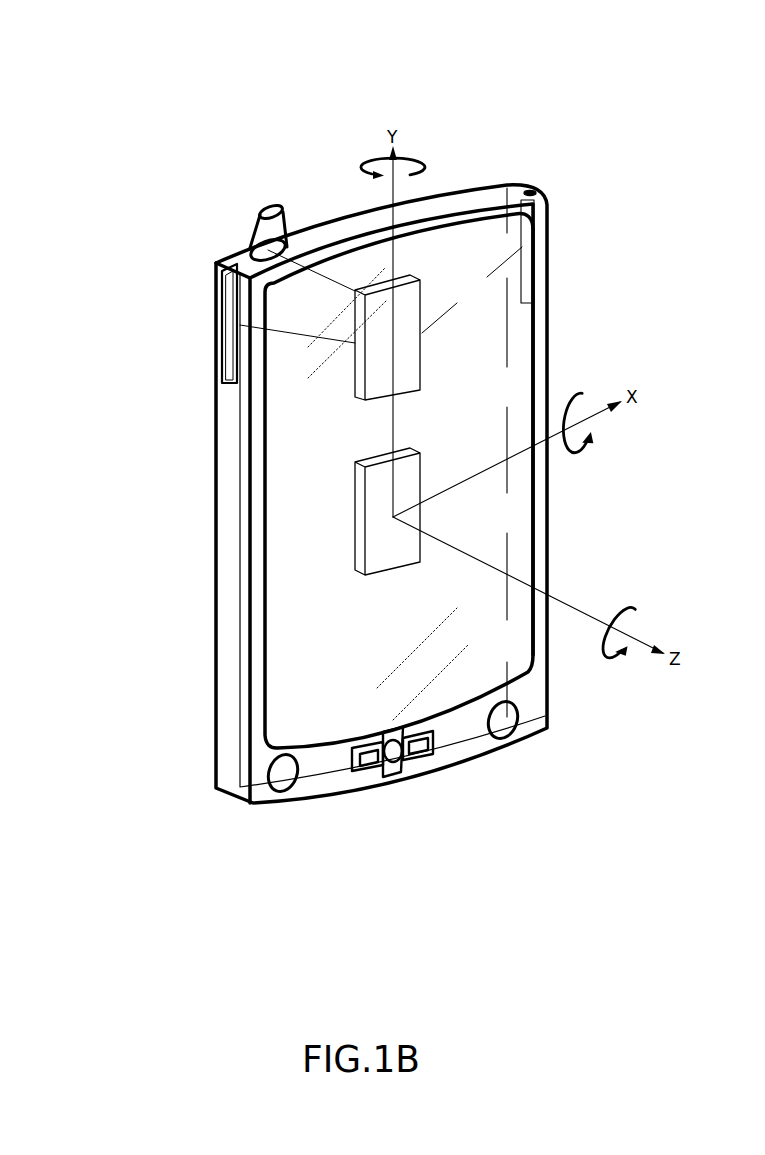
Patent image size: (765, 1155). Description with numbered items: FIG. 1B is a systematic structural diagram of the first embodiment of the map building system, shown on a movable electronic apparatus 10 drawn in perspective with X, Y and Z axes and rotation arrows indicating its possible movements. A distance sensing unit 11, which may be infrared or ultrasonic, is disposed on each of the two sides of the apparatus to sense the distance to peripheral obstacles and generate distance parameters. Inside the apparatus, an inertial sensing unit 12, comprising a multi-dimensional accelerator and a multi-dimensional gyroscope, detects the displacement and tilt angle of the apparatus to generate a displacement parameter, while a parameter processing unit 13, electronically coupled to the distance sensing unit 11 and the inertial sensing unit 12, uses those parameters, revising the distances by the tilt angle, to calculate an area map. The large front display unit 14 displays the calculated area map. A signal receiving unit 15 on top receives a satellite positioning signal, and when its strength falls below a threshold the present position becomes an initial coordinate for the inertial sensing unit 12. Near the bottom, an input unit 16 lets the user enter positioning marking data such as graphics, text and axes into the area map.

The movable electronic apparatus 10 is at (497, 160).
The distance sensing unit 11 is at (222, 284).
The inertial sensing unit 12 is at (355, 522).
The parameter processing unit 13 is at (382, 282).
The display unit 14 is at (277, 623).
The signal receiving unit 15 is at (270, 212).
The input unit 16 is at (413, 757).